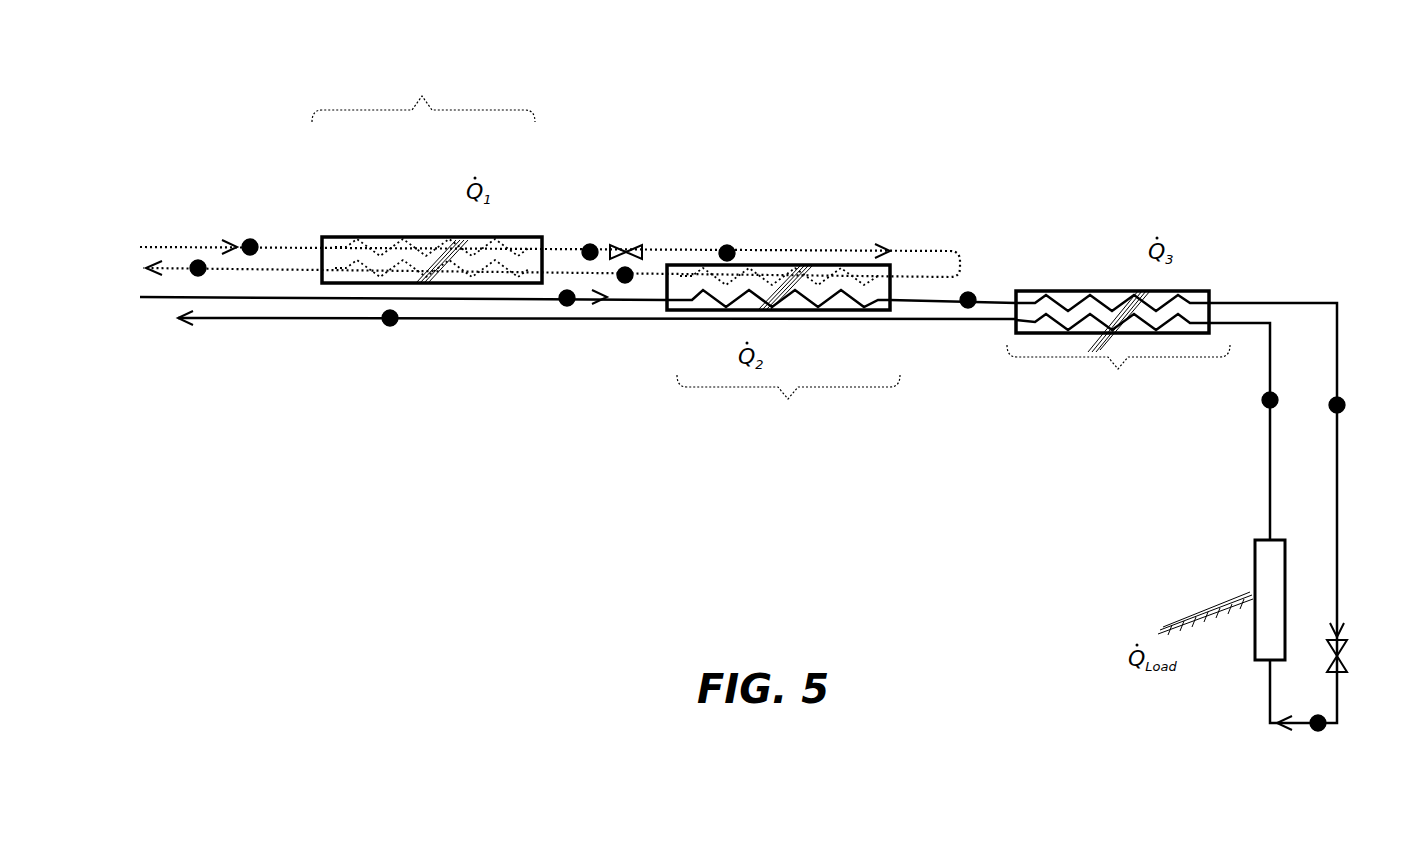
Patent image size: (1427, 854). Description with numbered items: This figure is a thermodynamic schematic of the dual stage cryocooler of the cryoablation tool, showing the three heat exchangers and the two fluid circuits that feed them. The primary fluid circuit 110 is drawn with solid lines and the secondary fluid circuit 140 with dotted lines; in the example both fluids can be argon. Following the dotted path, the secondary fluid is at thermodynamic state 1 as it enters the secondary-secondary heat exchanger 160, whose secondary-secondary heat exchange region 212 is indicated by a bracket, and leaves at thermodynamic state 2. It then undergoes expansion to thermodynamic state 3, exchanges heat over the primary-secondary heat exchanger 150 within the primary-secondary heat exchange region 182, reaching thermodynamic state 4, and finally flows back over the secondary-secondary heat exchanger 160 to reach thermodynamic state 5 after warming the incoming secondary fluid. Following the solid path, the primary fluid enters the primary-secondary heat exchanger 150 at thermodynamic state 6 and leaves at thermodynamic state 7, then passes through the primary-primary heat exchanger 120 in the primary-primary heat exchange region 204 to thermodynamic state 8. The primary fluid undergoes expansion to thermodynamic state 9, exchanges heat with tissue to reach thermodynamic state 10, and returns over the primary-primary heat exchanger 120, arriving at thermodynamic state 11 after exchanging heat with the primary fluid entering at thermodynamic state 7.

The thermodynamic state 1 is at (250, 247).
The thermodynamic state 2 is at (590, 252).
The thermodynamic state 3 is at (727, 253).
The thermodynamic state 4 is at (625, 275).
The thermodynamic state 5 is at (192, 271).
The thermodynamic state 6 is at (566, 300).
The thermodynamic state 7 is at (968, 297).
The thermodynamic state 8 is at (1340, 405).
The thermodynamic state 9 is at (1318, 732).
The thermodynamic state 10 is at (1268, 402).
The thermodynamic state 11 is at (390, 320).
The primary fluid circuit 110 is at (255, 320).
The primary-primary heat exchanger 120 is at (1048, 291).
The secondary fluid circuit 140 is at (153, 247).
The primary-secondary heat exchanger 150 is at (790, 265).
The secondary-secondary heat exchanger 160 is at (342, 237).
The primary-secondary heat exchange region 182 is at (700, 387).
The primary-primary heat exchange region 204 is at (1030, 357).
The secondary-secondary heat exchange region 212 is at (372, 108).